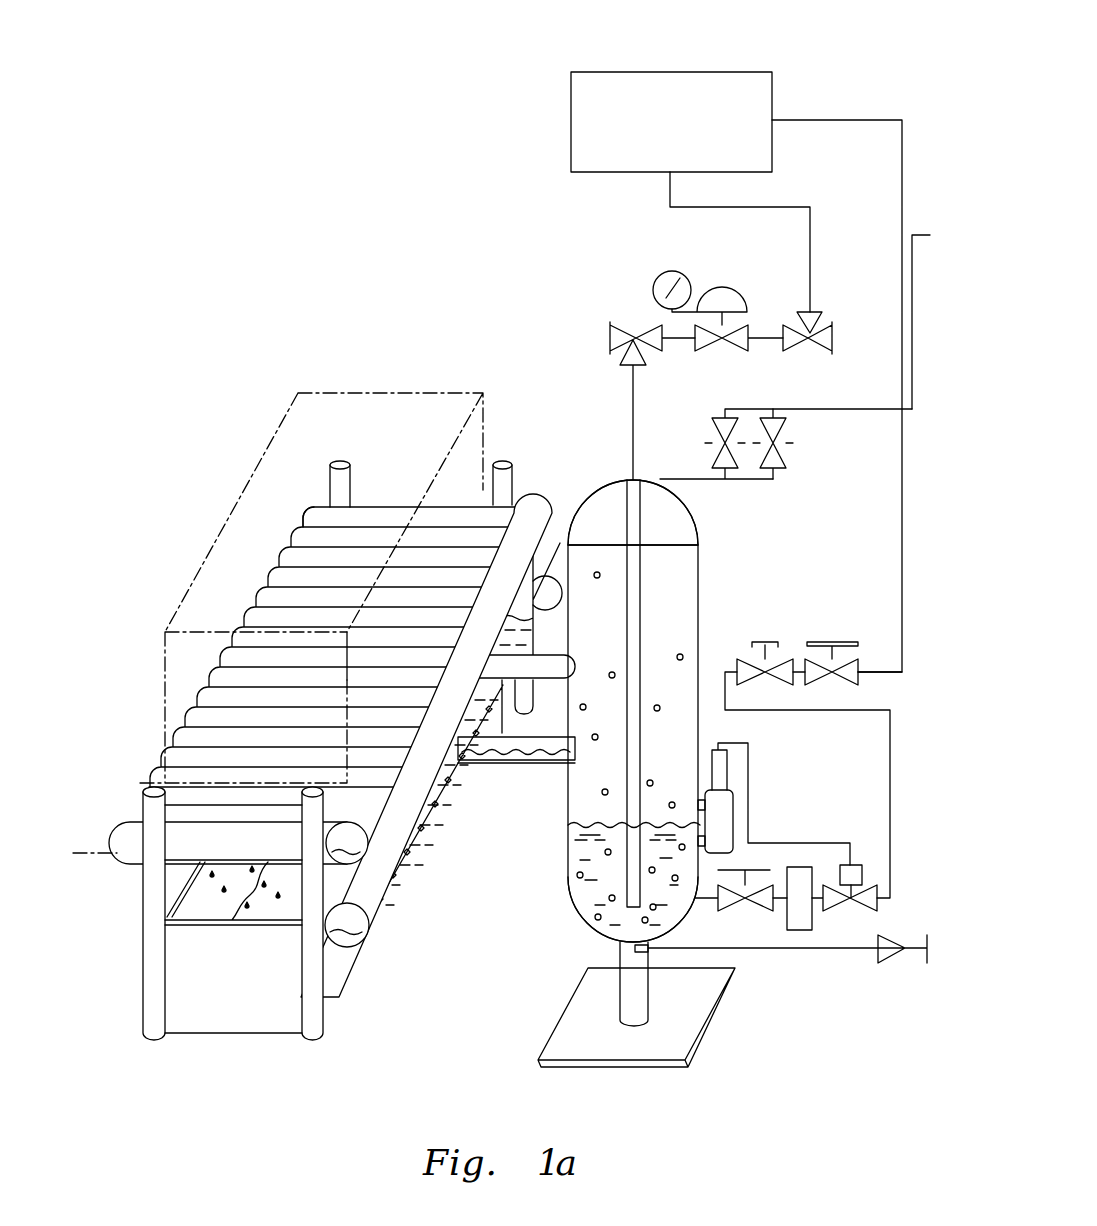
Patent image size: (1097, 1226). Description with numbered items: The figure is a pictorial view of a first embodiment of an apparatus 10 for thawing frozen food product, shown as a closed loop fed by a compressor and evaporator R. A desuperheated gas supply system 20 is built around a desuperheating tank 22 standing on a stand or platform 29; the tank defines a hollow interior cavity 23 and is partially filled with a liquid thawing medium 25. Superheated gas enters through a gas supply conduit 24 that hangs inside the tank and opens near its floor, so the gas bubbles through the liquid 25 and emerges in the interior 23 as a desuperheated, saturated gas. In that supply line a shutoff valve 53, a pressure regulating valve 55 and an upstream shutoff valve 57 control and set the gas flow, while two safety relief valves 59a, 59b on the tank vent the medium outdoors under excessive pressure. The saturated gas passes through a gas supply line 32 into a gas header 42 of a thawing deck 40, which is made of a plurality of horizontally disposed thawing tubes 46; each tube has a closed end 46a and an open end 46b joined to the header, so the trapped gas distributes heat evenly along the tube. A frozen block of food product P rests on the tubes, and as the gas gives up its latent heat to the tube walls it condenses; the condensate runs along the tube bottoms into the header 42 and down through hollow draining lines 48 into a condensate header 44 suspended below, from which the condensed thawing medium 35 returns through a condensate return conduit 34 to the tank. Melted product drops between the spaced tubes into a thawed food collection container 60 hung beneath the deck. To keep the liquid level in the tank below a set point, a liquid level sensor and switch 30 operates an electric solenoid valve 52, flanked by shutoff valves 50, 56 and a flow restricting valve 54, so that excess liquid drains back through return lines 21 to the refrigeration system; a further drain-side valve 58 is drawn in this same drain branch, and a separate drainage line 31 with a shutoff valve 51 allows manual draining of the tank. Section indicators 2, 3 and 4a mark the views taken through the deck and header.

The apparatus 10 is at (358, 290).
The compressor and evaporator R is at (705, 72).
The block of frozen food product P is at (428, 412).
The thawing deck 40 is at (112, 545).
The thawing tubes 46 is at (290, 505).
The closed end 46a is at (296, 532).
The open end 46b is at (390, 888).
The gas header 42 is at (550, 508).
The condensate header 44 is at (372, 905).
The condensed thawing medium 35 is at (352, 950).
The thawed food collection container 60 is at (192, 1000).
The gas supply line 32 is at (533, 680).
The condensate return conduit 34 is at (548, 765).
The draining lines 48 is at (385, 850).
The desuperheated gas supply system 20 is at (775, 623).
The return lines 21 is at (890, 755).
The desuperheating tank 22 is at (700, 570).
The hollow interior cavity 23 is at (662, 572).
The gas supply conduit 24 is at (605, 497).
The liquid thawing medium 25 is at (585, 900).
The stand or platform 29 is at (707, 1034).
The liquid level sensor and switch 30 is at (745, 775).
The drainage line 31 is at (800, 933).
The shutoff valve 50 is at (742, 905).
The shutoff valve 51 is at (890, 962).
The electric solenoid valve 52 is at (862, 865).
The shutoff valve 53 is at (636, 338).
The flow restricting valve 54 is at (762, 688).
The pressure regulating valve 55 is at (745, 318).
The shutoff valve 56 is at (836, 688).
The shutoff valve 57 is at (825, 312).
The solenoid valve 58 is at (838, 915).
The safety relief valve 59a is at (740, 481).
The safety relief valve 59b is at (790, 420).
The section line 2 is at (73, 853).
The section line 3 is at (575, 471).
The section line 4a is at (133, 658).